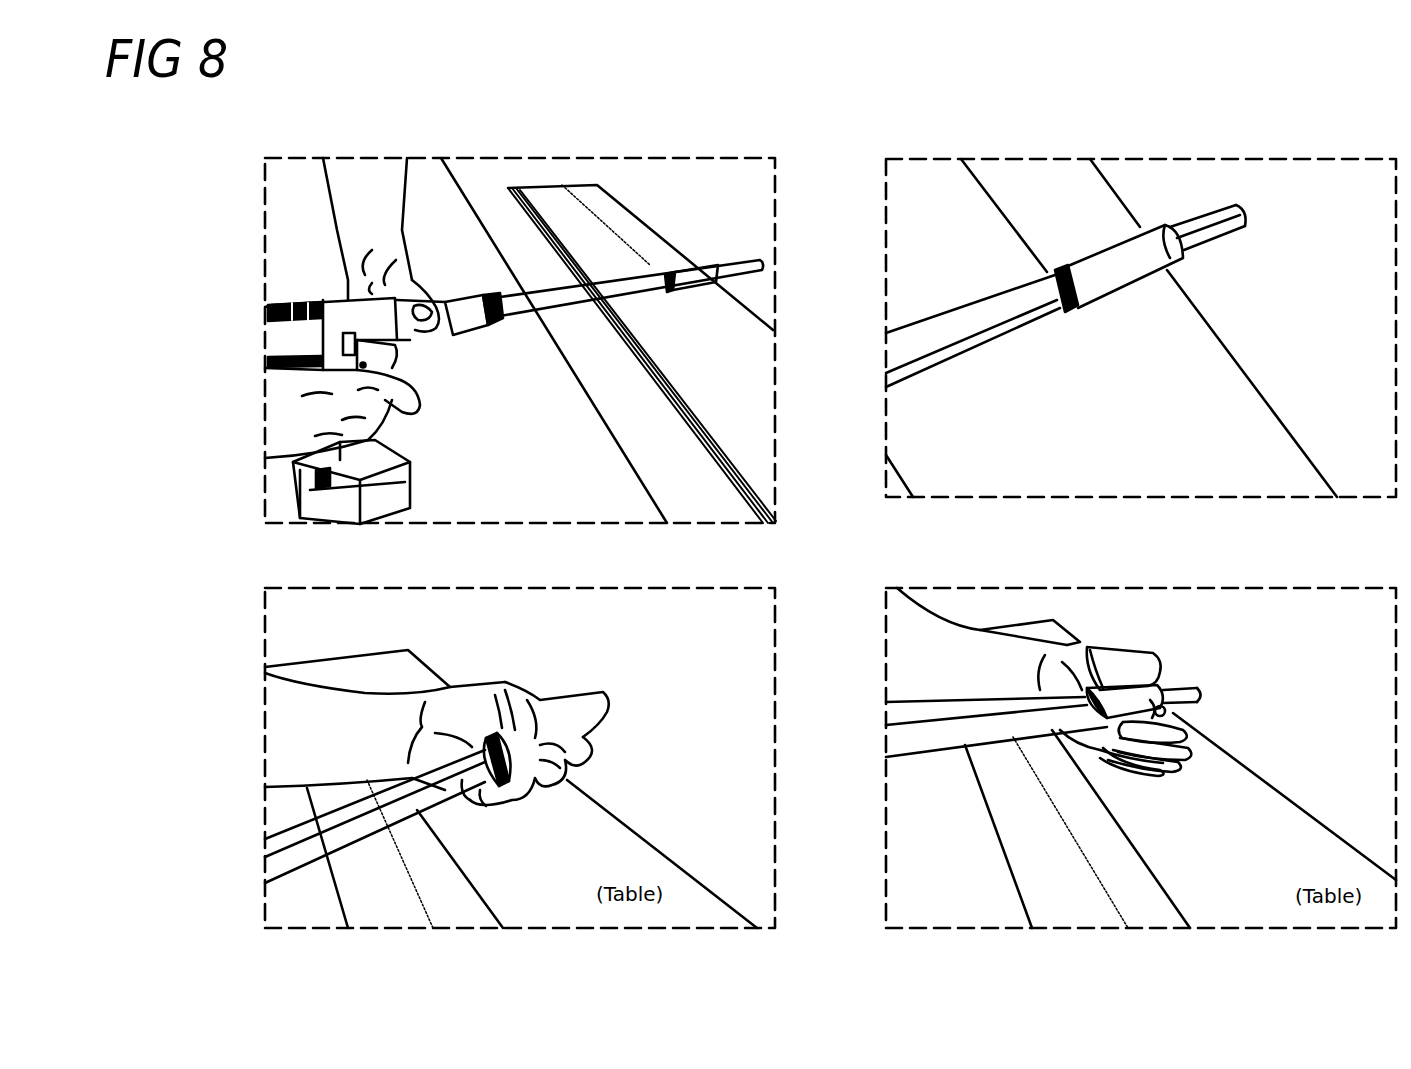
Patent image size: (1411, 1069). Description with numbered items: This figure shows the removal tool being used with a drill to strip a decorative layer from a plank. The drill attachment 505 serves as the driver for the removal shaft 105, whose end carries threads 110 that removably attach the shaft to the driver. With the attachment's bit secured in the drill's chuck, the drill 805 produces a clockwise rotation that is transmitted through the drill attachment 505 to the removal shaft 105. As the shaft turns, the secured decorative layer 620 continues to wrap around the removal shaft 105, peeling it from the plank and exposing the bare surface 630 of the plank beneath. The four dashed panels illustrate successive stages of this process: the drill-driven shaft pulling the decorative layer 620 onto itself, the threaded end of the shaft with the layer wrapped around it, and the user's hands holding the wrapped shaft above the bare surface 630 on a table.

The removal shaft 105 is at (407, 228).
The threads 110 is at (1022, 300).
The drill attachment 505 is at (478, 330).
The decorative layer 620 is at (1300, 290).
The bare surface 630 is at (1090, 195).
The drill 805 is at (412, 462).